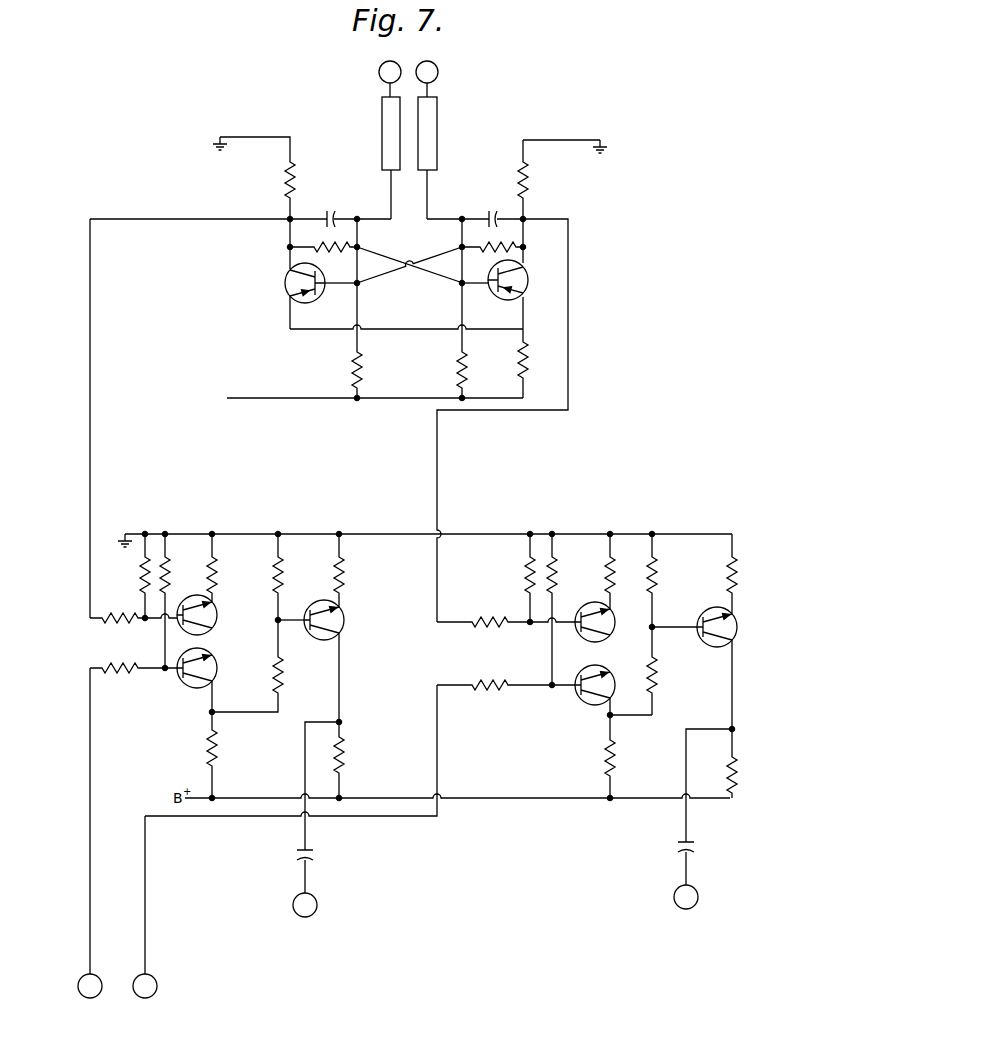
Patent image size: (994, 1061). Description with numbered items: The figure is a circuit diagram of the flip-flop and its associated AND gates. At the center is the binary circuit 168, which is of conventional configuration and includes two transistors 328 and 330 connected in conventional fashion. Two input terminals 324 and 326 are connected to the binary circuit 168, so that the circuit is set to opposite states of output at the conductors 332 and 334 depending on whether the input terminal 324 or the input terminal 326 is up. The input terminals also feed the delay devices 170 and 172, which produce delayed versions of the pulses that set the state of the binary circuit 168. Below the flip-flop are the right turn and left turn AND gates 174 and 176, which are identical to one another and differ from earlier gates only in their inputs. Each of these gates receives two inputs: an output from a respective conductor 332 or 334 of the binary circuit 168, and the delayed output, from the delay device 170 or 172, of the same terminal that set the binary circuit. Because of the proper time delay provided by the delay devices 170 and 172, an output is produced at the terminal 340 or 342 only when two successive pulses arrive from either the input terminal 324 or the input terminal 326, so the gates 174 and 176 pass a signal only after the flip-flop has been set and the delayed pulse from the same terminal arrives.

The binary circuit 168 is at (379, 368).
The delay device 170 is at (437, 108).
The delay device 172 is at (382, 110).
The right turn AND gate 174 is at (297, 490).
The left turn AND gate 176 is at (567, 495).
The input terminal 324 is at (383, 70).
The input terminal 326 is at (436, 66).
The transistor 328 is at (285, 296).
The transistor 330 is at (528, 268).
The conductor 332 is at (90, 334).
The conductor 334 is at (570, 306).
The terminal 340 is at (308, 917).
The terminal 342 is at (684, 909).